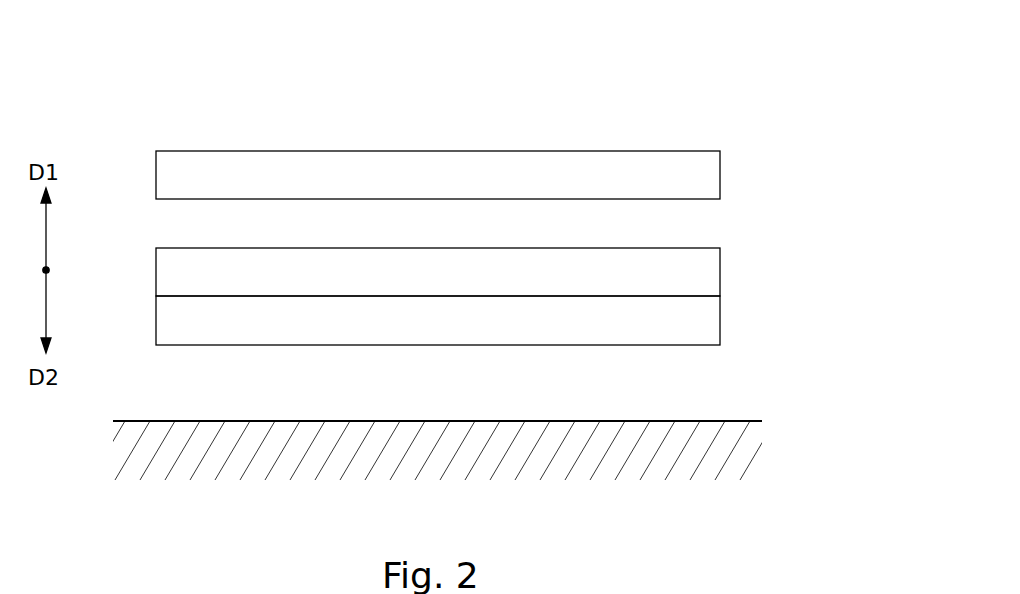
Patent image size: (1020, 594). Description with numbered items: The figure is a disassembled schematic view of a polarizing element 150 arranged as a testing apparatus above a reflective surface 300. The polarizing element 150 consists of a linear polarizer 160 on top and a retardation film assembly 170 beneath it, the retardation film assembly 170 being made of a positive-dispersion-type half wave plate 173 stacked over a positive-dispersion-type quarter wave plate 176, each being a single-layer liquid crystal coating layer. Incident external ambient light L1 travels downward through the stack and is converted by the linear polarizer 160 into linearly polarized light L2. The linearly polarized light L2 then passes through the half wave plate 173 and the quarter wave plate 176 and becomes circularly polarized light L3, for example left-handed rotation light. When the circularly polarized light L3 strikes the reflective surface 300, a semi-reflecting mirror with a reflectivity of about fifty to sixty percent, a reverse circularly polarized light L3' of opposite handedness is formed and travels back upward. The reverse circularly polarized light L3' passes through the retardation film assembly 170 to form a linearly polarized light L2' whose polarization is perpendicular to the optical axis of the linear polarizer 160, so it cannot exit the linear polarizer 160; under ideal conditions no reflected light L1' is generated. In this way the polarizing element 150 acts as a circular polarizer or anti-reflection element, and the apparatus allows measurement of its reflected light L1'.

The polarizing element 150 is at (130, 80).
The linear polarizer 160 is at (705, 181).
The retardation film assembly 170 is at (504, 296).
The positive-dispersion-type half wave plate 173 is at (705, 276).
The positive-dispersion-type quarter wave plate 176 is at (472, 320).
The reflective surface 300 is at (720, 421).
The incident light L1 is at (469, 126).
The linearly polarized light L2 is at (469, 222).
The circularly polarized light L3 is at (469, 368).
The reflected light L1' is at (646, 127).
The linearly polarized light L2' is at (646, 223).
The reverse circularly polarized light L3' is at (646, 368).